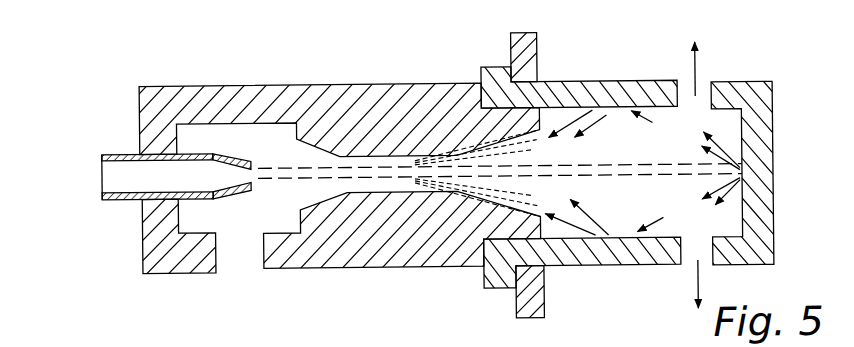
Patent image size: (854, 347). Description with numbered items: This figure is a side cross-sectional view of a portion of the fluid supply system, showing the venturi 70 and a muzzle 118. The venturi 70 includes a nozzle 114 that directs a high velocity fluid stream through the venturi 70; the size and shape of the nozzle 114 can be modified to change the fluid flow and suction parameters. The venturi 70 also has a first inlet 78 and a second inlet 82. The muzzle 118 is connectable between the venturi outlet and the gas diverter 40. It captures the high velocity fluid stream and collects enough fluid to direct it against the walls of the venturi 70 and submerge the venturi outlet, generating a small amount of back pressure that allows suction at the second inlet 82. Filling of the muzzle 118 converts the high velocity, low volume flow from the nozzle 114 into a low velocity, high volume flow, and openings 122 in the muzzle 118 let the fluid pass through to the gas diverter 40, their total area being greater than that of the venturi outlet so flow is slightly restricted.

The gas diverter 40 is at (538, 36).
The venturi 70 is at (360, 160).
The first inlet 78 is at (108, 168).
The second inlet 82 is at (240, 260).
The nozzle 114 is at (235, 153).
The muzzle 118 is at (760, 131).
The openings 122 is at (704, 82).